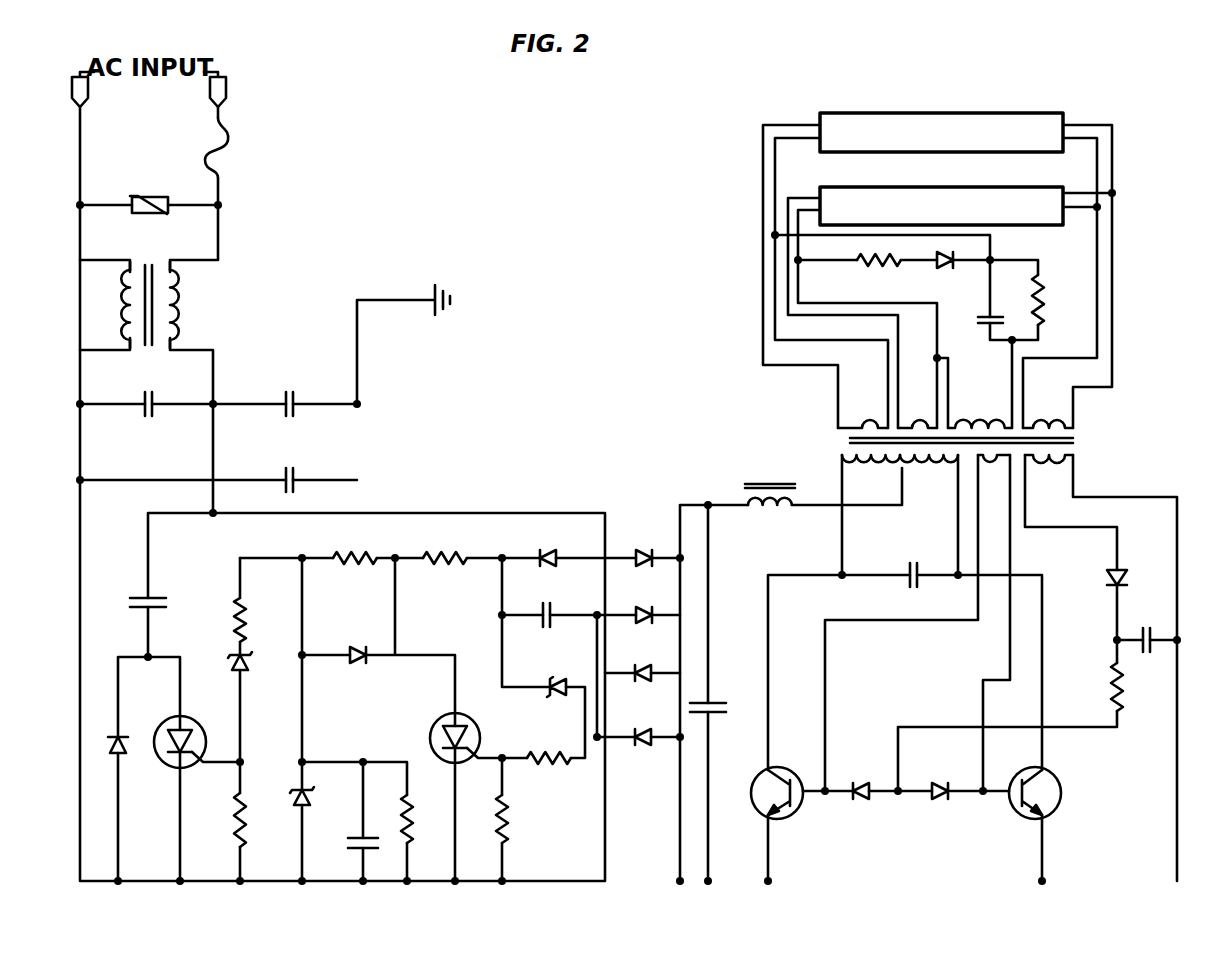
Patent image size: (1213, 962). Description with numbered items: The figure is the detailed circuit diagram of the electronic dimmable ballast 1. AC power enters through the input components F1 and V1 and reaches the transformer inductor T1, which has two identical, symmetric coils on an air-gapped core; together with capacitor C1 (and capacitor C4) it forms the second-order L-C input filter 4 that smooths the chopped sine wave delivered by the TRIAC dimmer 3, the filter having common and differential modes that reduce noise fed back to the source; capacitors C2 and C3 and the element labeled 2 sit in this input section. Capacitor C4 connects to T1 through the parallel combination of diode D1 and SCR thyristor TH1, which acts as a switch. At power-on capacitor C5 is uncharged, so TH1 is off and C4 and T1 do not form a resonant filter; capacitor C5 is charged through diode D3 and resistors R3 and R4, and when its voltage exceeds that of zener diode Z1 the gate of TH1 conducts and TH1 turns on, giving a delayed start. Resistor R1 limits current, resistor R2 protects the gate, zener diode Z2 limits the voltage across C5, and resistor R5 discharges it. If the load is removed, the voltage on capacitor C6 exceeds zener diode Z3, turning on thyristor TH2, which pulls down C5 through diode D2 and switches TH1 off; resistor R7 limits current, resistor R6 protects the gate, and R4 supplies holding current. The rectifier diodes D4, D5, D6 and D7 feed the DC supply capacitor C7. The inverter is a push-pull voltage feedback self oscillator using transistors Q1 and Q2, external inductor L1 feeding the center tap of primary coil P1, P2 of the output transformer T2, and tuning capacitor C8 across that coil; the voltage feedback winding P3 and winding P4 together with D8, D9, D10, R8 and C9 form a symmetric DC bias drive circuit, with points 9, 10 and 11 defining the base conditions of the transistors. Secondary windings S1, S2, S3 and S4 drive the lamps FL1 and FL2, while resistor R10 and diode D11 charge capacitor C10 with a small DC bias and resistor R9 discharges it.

The fuse F1 is at (236, 148).
The varistor V1 is at (149, 191).
The transformer inductor T1 is at (149, 286).
The dimmable ballast 1 is at (184, 334).
The transformer T1 terminal 2 is at (184, 280).
The TRIAC dimmer 3 is at (115, 280).
The L-C input filter 4 is at (115, 334).
The capacitor C1 is at (148, 391).
The capacitor C2 is at (290, 390).
The capacitor C3 is at (290, 461).
The capacitor C4 is at (137, 588).
The capacitor C5 is at (341, 832).
The capacitor C6 is at (526, 610).
The capacitor C7 is at (722, 699).
The tuning capacitor C8 is at (915, 557).
The capacitor C9 is at (1141, 631).
The capacitor C10 is at (969, 332).
The diode D1 is at (104, 760).
The diode D2 is at (355, 640).
The diode D3 is at (548, 542).
The rectifier diode D4 is at (642, 542).
The rectifier diode D5 is at (642, 599).
The rectifier diode D6 is at (642, 657).
The rectifier diode D7 is at (642, 722).
The diode D8 is at (860, 774).
The diode D9 is at (938, 774).
The diode D10 is at (1086, 574).
The diode D11 is at (947, 275).
The resistor R1 is at (258, 620).
The resistor R2 is at (220, 820).
The resistor R3 is at (355, 542).
The resistor R4 is at (445, 542).
The resistor R5 is at (424, 819).
The resistor R6 is at (519, 819).
The resistor R7 is at (549, 732).
The resistor R8 is at (1096, 687).
The resistor R9 is at (1059, 300).
The resistor R10 is at (875, 276).
The zener diode Z1 is at (255, 677).
The zener diode Z2 is at (283, 815).
The zener diode Z3 is at (562, 672).
The SCR thyristor TH1 is at (200, 722).
The thyristor TH2 is at (430, 738).
The transistor Q1 is at (759, 799).
The transistor Q2 is at (1039, 796).
The external inductor L1 is at (770, 477).
The output transformer T2 is at (982, 448).
The primary coil P1 is at (871, 479).
The primary coil P2 is at (929, 479).
The voltage feedback winding P3 is at (991, 479).
The winding P4 is at (1049, 479).
The secondary winding S1 is at (863, 406).
The secondary winding S2 is at (917, 406).
The secondary winding S3 is at (980, 406).
The secondary winding S4 is at (1048, 406).
The fluorescent lamp FL1 is at (941, 190).
The fluorescent lamp FL2 is at (941, 117).
The point 9 is at (823, 808).
The point 10 is at (981, 808).
The point 11 is at (896, 808).